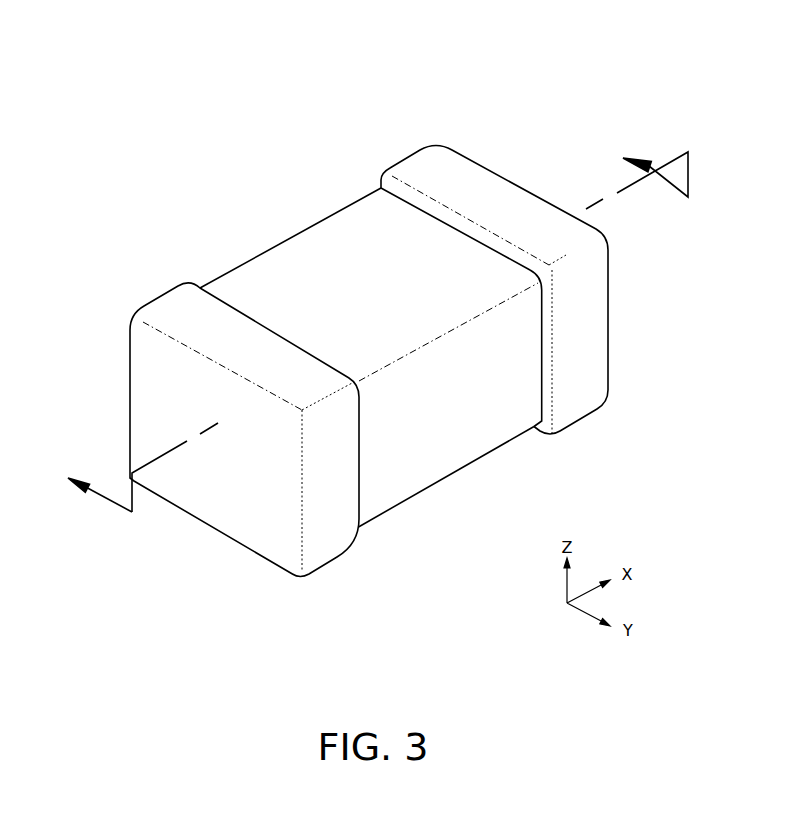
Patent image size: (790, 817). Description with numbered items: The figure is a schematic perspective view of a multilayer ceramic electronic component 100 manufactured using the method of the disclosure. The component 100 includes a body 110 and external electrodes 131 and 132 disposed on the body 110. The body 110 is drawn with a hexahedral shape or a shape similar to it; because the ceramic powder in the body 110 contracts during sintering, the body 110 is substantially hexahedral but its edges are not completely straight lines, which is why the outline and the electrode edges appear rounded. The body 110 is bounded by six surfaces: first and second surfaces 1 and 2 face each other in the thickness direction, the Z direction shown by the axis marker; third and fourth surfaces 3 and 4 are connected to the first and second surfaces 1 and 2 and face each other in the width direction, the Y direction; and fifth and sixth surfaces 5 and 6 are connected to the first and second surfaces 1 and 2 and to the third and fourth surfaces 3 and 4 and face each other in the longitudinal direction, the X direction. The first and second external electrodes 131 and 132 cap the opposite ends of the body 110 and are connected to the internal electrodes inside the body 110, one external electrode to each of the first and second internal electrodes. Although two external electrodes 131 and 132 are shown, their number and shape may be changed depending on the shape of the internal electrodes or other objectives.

The multilayer ceramic electronic component 100 is at (210, 54).
The body 110 is at (369, 355).
The first external electrode 131 is at (241, 405).
The second external electrode 132 is at (520, 262).
The first surface 1 is at (398, 455).
The second surface 2 is at (355, 233).
The third surface 3 is at (205, 491).
The fourth surface 4 is at (573, 330).
The fifth surface 5 is at (461, 437).
The sixth surface 6 is at (293, 288).